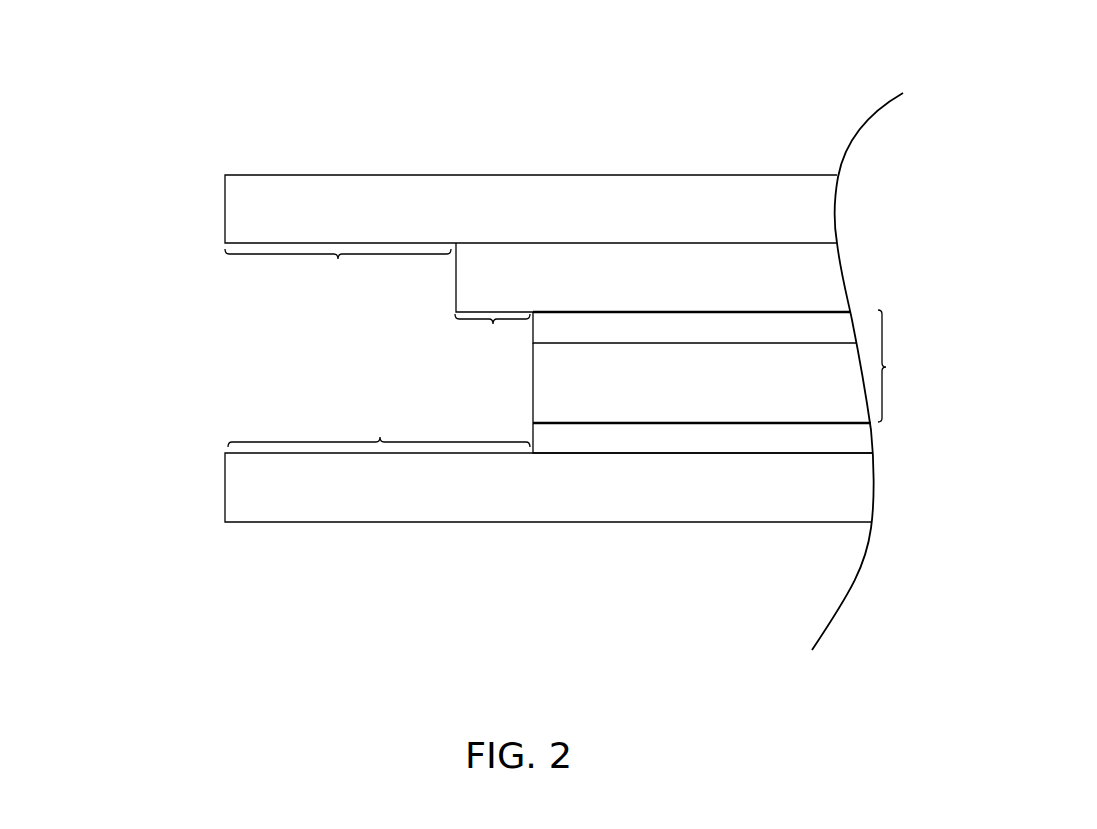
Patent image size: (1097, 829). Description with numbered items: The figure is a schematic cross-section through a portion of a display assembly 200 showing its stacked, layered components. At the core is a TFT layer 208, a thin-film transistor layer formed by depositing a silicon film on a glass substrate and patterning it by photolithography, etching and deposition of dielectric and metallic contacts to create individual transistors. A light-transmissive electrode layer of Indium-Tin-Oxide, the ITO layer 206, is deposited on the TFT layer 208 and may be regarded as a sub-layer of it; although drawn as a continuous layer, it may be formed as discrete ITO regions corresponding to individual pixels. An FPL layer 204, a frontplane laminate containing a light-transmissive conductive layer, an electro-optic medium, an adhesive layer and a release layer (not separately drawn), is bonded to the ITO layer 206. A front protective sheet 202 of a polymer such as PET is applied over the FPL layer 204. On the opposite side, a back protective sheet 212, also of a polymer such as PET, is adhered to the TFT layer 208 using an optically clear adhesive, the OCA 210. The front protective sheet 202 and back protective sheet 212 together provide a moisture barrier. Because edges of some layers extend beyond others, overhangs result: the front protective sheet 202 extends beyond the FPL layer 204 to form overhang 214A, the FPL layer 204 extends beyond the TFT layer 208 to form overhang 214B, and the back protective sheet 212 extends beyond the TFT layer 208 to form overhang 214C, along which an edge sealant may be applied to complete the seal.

The display assembly 200 is at (1031, 36).
The front protective sheet 202 is at (812, 222).
The FPL layer 204 is at (827, 267).
The ITO layer 206 is at (835, 318).
The TFT layer 208 is at (885, 385).
The OCA 210 is at (865, 440).
The back protective sheet 212 is at (857, 500).
The overhang 214A is at (315, 257).
The overhang 214B is at (493, 323).
The overhang 214C is at (313, 443).